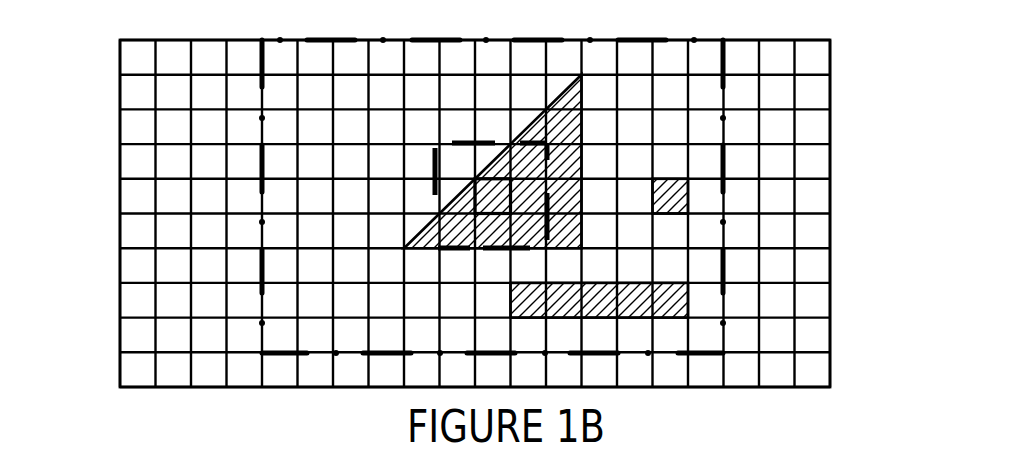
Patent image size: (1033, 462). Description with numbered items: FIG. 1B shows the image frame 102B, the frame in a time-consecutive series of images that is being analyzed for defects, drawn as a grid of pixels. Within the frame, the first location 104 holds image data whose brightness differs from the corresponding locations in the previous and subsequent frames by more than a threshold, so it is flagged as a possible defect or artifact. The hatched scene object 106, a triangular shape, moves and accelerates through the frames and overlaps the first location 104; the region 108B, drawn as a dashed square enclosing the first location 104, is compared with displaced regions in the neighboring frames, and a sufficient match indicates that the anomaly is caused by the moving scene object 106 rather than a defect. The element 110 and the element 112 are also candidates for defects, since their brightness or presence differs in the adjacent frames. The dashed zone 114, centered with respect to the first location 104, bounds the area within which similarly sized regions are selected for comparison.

The image frame 102B is at (120, 58).
The first location 104 is at (475, 178).
The scene object 106 is at (555, 98).
The region 108B is at (547, 197).
The element 110 is at (688, 200).
The element 112 is at (688, 304).
The zone 114 is at (262, 158).